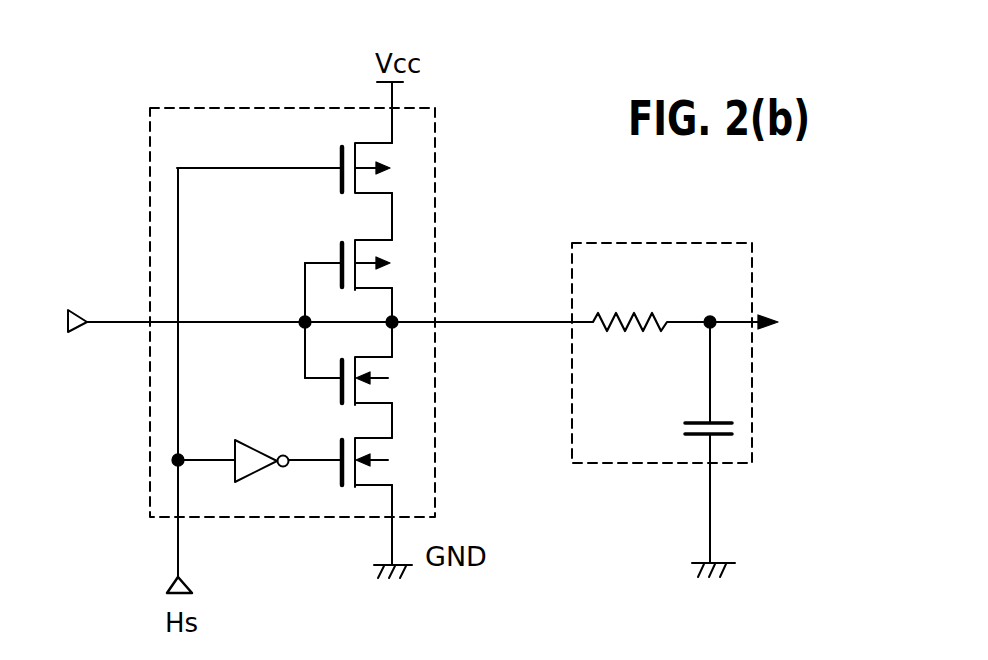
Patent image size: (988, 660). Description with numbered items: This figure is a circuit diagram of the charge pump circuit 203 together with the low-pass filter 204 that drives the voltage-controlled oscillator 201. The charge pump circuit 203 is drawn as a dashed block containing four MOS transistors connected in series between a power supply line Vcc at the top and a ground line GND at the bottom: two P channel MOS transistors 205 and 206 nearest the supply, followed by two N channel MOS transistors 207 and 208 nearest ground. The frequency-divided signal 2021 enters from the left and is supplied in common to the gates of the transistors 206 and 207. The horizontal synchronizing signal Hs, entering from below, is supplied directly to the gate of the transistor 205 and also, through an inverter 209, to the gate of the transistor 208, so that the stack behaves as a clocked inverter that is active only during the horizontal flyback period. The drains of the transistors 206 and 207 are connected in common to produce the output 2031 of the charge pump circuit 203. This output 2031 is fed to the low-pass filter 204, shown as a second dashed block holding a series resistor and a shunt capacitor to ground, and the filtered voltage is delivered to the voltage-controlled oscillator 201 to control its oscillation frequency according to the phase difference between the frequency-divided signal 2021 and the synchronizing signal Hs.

The voltage-controlled oscillator (VCO) 201 is at (804, 326).
The charge pump circuit 203 is at (437, 150).
The low-pass filter (LPF) 204 is at (712, 242).
The P channel MOS transistor 205 is at (340, 152).
The P channel MOS transistor 206 is at (340, 242).
The N channel MOS transistor 207 is at (342, 393).
The N channel MOS transistor 208 is at (342, 483).
The inverter 209 is at (262, 467).
The frequency-divided signal 2021 is at (317, 302).
The output of the charge pump circuit 2031 is at (545, 323).